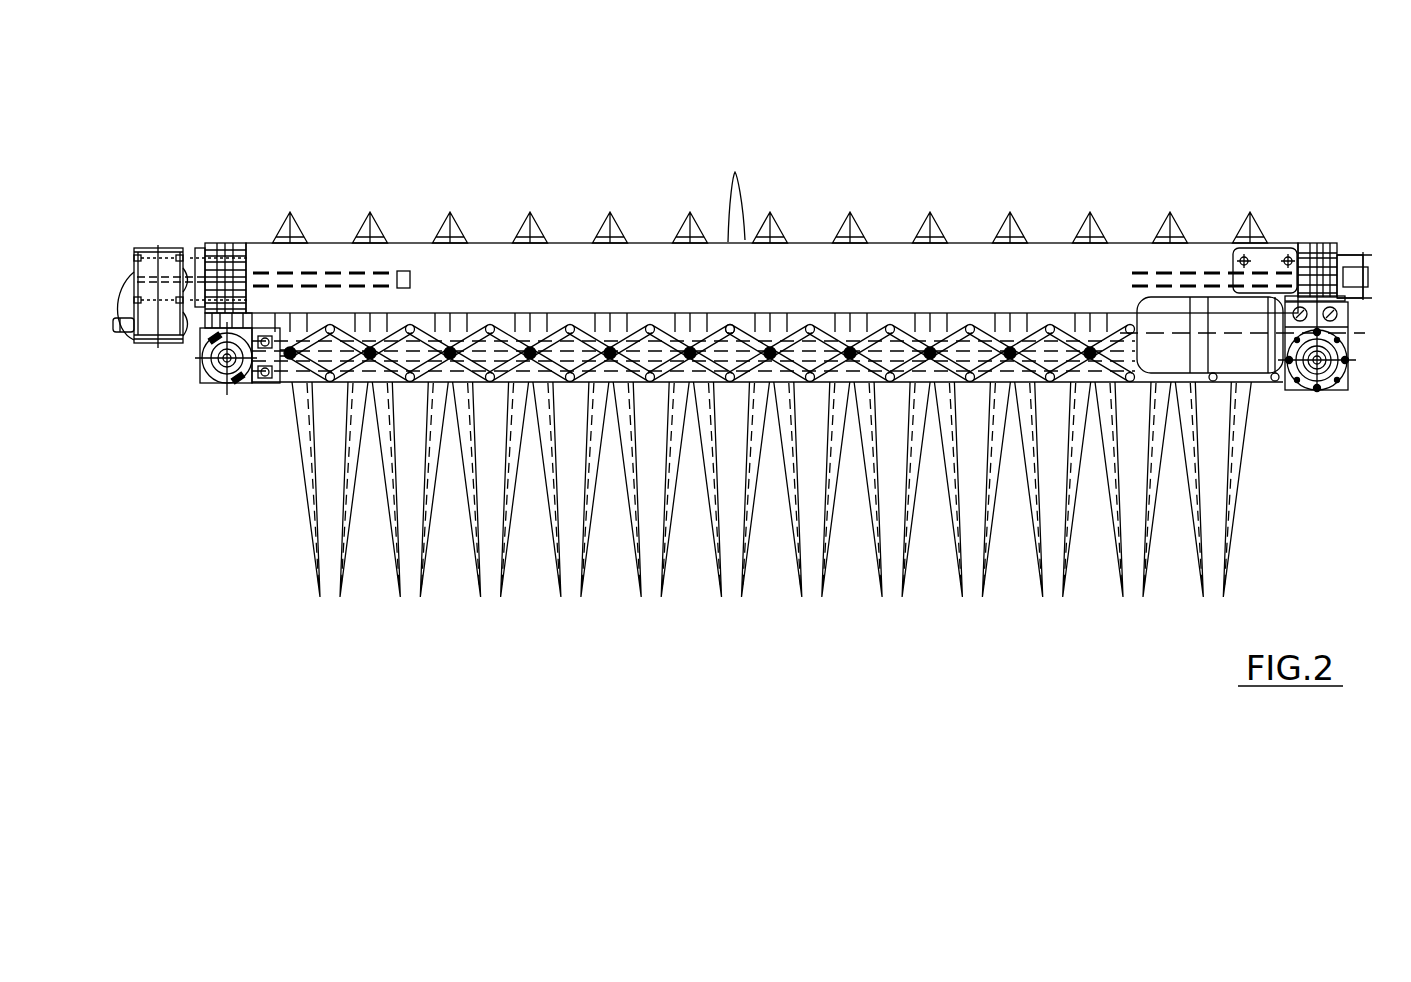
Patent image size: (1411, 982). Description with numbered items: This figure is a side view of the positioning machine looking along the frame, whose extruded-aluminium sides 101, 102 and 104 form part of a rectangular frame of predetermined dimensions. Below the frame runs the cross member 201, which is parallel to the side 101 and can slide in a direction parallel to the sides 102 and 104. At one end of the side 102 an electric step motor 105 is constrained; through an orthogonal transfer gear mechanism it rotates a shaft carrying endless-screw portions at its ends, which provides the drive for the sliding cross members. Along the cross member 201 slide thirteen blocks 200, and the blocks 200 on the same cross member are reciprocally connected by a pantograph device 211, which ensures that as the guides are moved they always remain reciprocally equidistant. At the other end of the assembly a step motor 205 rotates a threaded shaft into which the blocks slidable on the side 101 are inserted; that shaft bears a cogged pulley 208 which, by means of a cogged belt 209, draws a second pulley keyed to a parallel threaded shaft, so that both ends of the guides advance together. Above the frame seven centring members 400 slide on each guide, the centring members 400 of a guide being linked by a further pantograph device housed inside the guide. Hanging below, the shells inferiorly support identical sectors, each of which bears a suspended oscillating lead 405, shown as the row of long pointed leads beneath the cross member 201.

The side 101 is at (475, 277).
The side 102 is at (1305, 245).
The side 104 is at (214, 243).
The electric step motor 105 is at (1257, 372).
The block 200 is at (382, 323).
The cross member 201 is at (282, 373).
The step motor 205 is at (120, 290).
The cogged pulley 208 is at (1365, 258).
The cogged belt 209 is at (1348, 257).
The pantograph device 211 is at (723, 323).
The centring member 400 is at (302, 232).
The suspended oscillating lead 405 is at (307, 470).